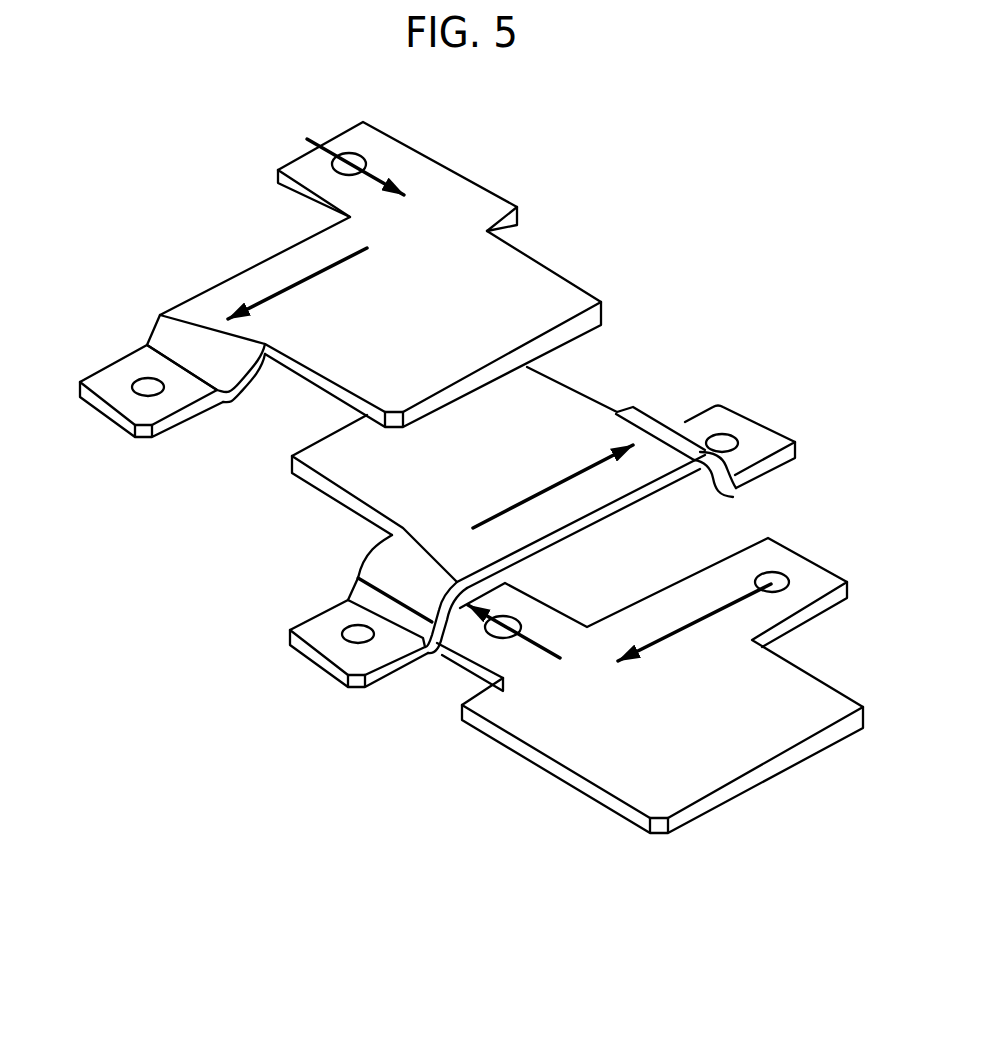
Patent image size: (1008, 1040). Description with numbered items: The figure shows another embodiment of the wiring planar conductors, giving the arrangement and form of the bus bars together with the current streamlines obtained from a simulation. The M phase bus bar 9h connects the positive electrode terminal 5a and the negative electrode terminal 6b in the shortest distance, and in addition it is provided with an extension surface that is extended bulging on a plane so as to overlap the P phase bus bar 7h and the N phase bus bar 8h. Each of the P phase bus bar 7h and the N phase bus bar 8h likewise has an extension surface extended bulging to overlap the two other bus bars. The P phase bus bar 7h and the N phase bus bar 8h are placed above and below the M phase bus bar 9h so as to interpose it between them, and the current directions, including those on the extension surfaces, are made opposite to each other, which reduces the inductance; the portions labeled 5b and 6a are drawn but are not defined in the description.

The positive electrode terminal 5a is at (325, 667).
The first terminal connection portion 5b is at (753, 595).
The second terminal connection portion 6a is at (127, 422).
The negative electrode terminal 6b is at (764, 441).
The P phase bus bar 7h is at (643, 702).
The N phase bus bar 8h is at (337, 301).
The M phase bus bar 9h is at (532, 494).